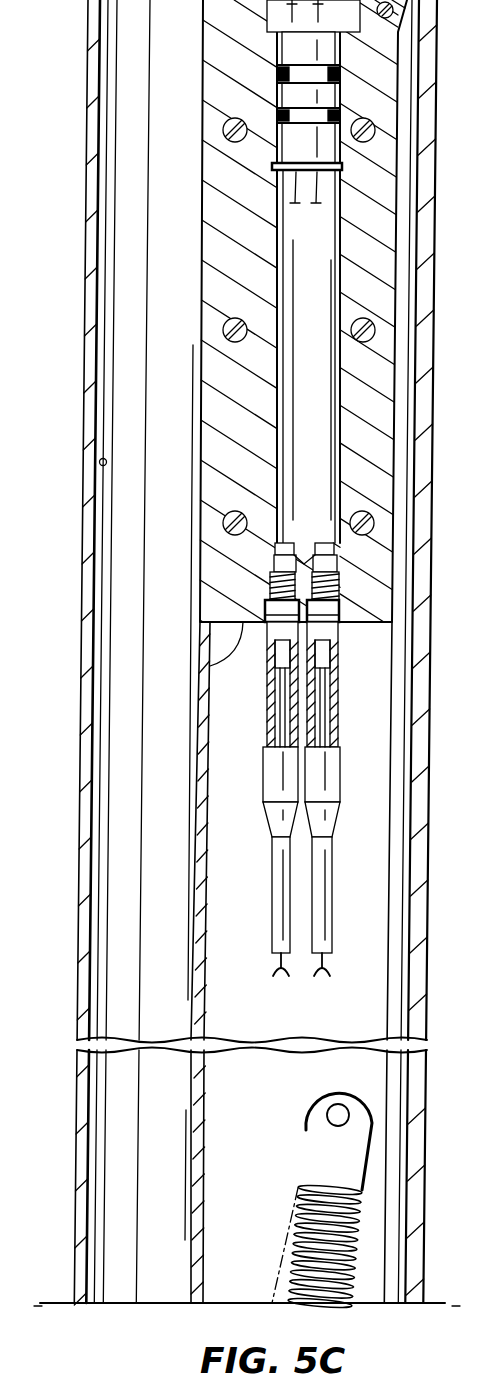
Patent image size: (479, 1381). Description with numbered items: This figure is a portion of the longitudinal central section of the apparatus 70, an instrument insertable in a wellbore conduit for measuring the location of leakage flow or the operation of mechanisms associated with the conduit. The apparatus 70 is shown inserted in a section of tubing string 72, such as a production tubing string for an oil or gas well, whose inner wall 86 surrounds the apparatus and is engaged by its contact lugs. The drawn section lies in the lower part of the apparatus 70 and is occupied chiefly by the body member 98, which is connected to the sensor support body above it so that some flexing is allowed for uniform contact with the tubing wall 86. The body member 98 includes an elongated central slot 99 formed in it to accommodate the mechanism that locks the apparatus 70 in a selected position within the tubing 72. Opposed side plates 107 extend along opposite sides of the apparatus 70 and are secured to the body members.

The apparatus 70 is at (247, 665).
The tubing string 72 is at (88, 80).
The inner wall of the tubing 86 is at (100, 464).
The body member 98 is at (202, 85).
The elongated central slot 99 is at (243, 626).
The side plates 107 is at (232, 757).